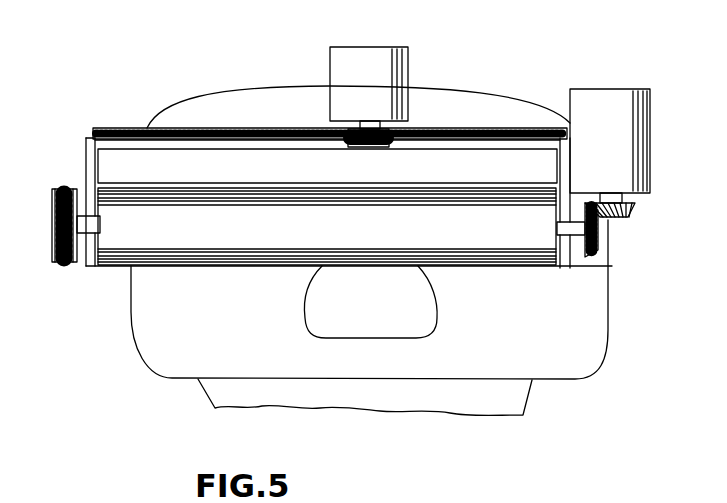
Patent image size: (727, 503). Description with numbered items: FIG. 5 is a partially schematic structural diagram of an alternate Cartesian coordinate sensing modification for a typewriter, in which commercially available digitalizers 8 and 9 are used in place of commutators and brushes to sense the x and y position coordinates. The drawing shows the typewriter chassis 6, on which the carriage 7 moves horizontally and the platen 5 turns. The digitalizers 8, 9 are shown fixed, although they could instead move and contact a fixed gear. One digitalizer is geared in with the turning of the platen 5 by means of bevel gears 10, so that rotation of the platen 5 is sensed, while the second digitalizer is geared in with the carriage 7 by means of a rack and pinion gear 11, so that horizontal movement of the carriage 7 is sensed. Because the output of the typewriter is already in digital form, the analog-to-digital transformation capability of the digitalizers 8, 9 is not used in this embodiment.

The platen 5 is at (251, 248).
The typewriter chassis 6 is at (146, 300).
The carriage 7 is at (67, 185).
The digitalizer 8 is at (338, 63).
The digitalizer 9 is at (640, 117).
The bevel gears 10 is at (624, 210).
The rack and pinion gear 11 is at (386, 135).